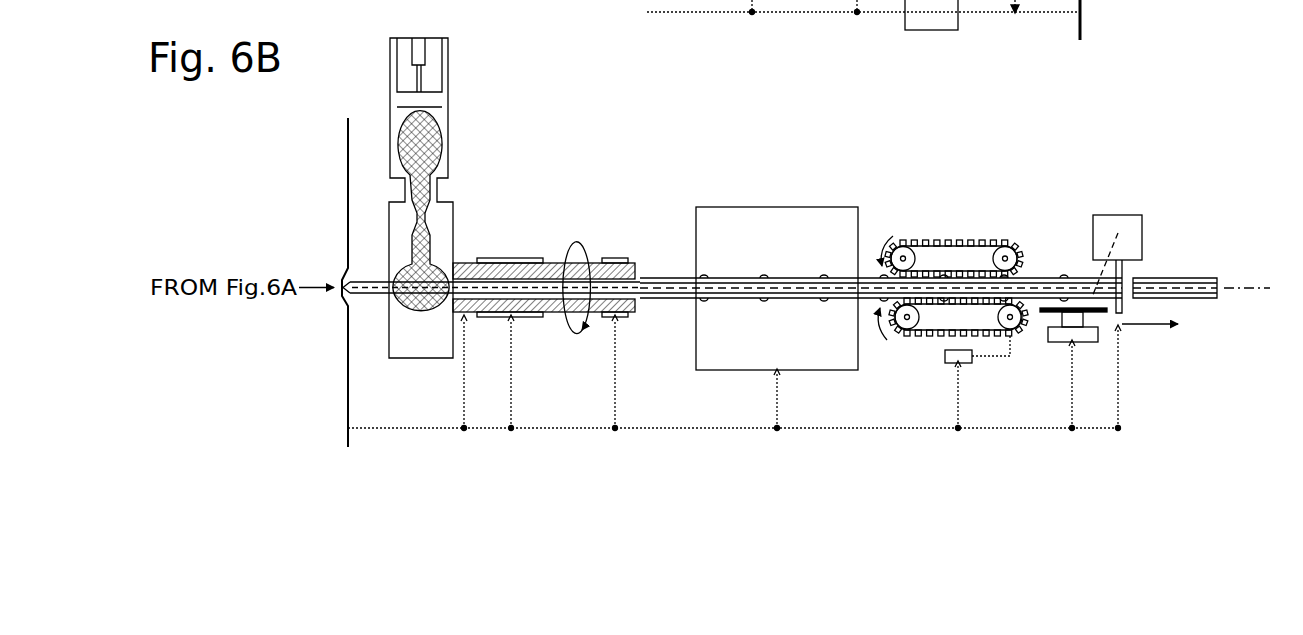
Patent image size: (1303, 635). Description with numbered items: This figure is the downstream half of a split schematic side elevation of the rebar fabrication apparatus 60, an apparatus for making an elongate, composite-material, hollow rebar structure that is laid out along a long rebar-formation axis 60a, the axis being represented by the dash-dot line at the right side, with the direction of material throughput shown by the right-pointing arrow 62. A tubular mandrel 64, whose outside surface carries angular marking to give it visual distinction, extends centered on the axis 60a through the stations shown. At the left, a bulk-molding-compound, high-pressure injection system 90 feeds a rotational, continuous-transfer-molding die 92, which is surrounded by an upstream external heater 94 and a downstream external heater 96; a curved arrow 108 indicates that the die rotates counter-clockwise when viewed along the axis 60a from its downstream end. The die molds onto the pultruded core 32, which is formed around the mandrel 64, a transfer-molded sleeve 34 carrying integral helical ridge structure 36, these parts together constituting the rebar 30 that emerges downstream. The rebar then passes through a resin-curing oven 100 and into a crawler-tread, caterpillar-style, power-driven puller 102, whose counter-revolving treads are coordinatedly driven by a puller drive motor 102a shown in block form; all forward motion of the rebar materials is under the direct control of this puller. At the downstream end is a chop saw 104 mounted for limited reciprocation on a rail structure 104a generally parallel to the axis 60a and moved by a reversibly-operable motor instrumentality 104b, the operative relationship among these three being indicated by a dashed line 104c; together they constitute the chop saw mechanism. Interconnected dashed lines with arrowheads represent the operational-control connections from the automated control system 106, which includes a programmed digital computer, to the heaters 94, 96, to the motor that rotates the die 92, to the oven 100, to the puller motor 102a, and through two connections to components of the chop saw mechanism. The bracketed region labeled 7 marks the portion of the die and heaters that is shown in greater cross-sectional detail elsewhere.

The coating station 7 is at (553, 272).
The rebar 30 is at (857, 238).
The pultruded core 32 is at (380, 296).
The transfer-molded sleeve 34 is at (881, 288).
The external-purchase-enhancing structure 36 is at (679, 272).
The rebar fabrication apparatus 60 is at (768, 152).
The rebar-formation axis 60a is at (1242, 286).
The throughput direction arrow 62 is at (1178, 330).
The tubular mandrel 64 is at (380, 283).
The injection system 90 is at (430, 198).
The rotational continuous-transfer-molding die 92 is at (553, 300).
The upstream external heater 94 is at (497, 321).
The downstream external heater 96 is at (623, 321).
The resin-curing oven 100 is at (810, 207).
The puller 102 is at (953, 299).
The puller drive motor 102a is at (953, 370).
The chop saw 104 is at (1086, 290).
The rail structure 104a is at (1043, 306).
The motor instrumentality 104b is at (1054, 353).
The dashed line connection 104c is at (1095, 270).
The automated control system 106 is at (916, 28).
The curved arrow 108 is at (572, 328).